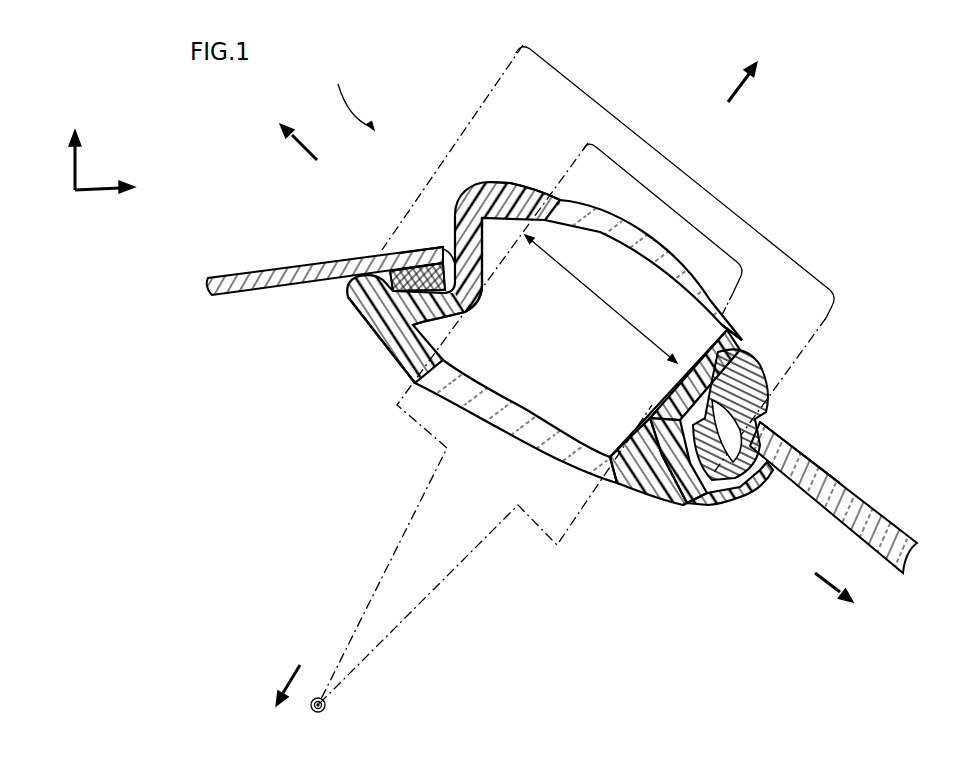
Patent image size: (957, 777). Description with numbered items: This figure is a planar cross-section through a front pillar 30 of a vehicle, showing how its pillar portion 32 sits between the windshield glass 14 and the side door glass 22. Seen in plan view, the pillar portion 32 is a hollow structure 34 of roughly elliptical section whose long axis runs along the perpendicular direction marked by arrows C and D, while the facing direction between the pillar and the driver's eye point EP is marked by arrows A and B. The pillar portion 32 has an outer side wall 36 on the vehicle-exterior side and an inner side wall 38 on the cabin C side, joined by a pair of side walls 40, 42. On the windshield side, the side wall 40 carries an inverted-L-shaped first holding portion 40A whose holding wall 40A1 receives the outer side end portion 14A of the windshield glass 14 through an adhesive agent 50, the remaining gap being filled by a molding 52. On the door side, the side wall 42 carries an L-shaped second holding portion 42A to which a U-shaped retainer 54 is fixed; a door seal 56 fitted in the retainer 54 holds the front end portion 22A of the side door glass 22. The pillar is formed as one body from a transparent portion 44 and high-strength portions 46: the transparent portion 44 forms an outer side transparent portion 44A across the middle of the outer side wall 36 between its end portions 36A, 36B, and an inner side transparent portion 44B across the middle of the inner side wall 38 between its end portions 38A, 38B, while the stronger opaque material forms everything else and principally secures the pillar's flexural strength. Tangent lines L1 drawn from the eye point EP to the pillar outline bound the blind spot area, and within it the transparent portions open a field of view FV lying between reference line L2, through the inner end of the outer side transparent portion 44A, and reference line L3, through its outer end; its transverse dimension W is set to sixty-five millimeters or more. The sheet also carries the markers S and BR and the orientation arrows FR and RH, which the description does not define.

The windshield glass 14 is at (233, 264).
The vehicle transverse direction outer side end portion 14A is at (410, 251).
The side door glass 22 is at (879, 501).
The front end portion 22A is at (787, 440).
The front pillar 30 is at (517, 337).
The pillar portion 32 is at (341, 311).
The hollow structure 34 is at (586, 352).
The outer side wall 36 is at (515, 182).
The transverse direction outer side end portion of outer side wall 36A is at (490, 183).
The transverse direction outer side end portion of outer side wall 36B is at (742, 330).
The inner side wall 38 is at (388, 365).
The transverse direction outer side end portion of inner side wall 38A is at (375, 339).
The transverse direction outer side end portion of inner side wall 38B is at (637, 497).
The side wall 40 is at (448, 212).
The first holding portion 40A is at (483, 255).
The holding wall 40A1 is at (450, 320).
The side wall 42 is at (703, 353).
The second holding portion 42A is at (665, 392).
The transparent portion 44 is at (578, 328).
The outer side transparent portion 44A is at (612, 218).
The inner side transparent portion 44B is at (512, 419).
The high-strength portion 46 is at (485, 221).
The adhesive agent 50 is at (387, 269).
The molding 52 is at (447, 223).
The retainer 54 is at (763, 378).
The door seal 56 is at (737, 500).
The space S is at (351, 95).
The cabin C is at (303, 147).
The tangent line L1 is at (468, 120).
The reference line L2 is at (565, 172).
The reference line L3 is at (745, 294).
The bending region BR is at (672, 163).
The field of view FV is at (673, 206).
The transverse dimension W is at (630, 320).
The eye point EP is at (328, 708).
The front direction FR is at (69, 150).
The right direction RH is at (121, 186).
The facing direction arrow A is at (741, 89).
The facing direction arrow B is at (291, 679).
The perpendicular direction arrow D is at (832, 591).